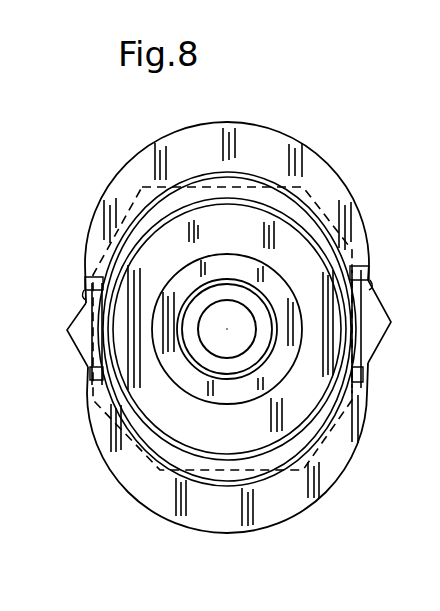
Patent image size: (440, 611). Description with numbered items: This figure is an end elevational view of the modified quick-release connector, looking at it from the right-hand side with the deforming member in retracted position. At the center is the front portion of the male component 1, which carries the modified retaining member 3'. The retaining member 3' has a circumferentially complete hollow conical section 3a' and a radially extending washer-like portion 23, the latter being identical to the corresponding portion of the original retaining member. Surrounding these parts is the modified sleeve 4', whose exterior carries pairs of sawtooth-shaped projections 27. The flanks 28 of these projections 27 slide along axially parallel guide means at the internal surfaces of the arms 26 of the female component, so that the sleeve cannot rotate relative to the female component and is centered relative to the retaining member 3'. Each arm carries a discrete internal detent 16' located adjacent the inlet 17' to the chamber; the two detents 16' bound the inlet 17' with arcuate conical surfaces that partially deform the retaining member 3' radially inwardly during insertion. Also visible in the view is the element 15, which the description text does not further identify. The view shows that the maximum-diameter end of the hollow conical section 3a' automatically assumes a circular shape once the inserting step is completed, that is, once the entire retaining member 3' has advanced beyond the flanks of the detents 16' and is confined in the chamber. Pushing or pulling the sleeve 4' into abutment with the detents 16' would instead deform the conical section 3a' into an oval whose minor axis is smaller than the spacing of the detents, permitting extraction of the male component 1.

The sleeve 4' is at (227, 307).
The retaining member 3' is at (237, 302).
The hollow conical section 3a' is at (217, 369).
The washer-like portion 23 is at (280, 276).
The male component 1 is at (205, 365).
The inner ring 15 is at (220, 387).
The arms 26 is at (77, 325).
The projections 27 is at (83, 283).
The flanks 28 is at (87, 297).
The detent 16' is at (237, 336).
The inlet 17' is at (253, 411).